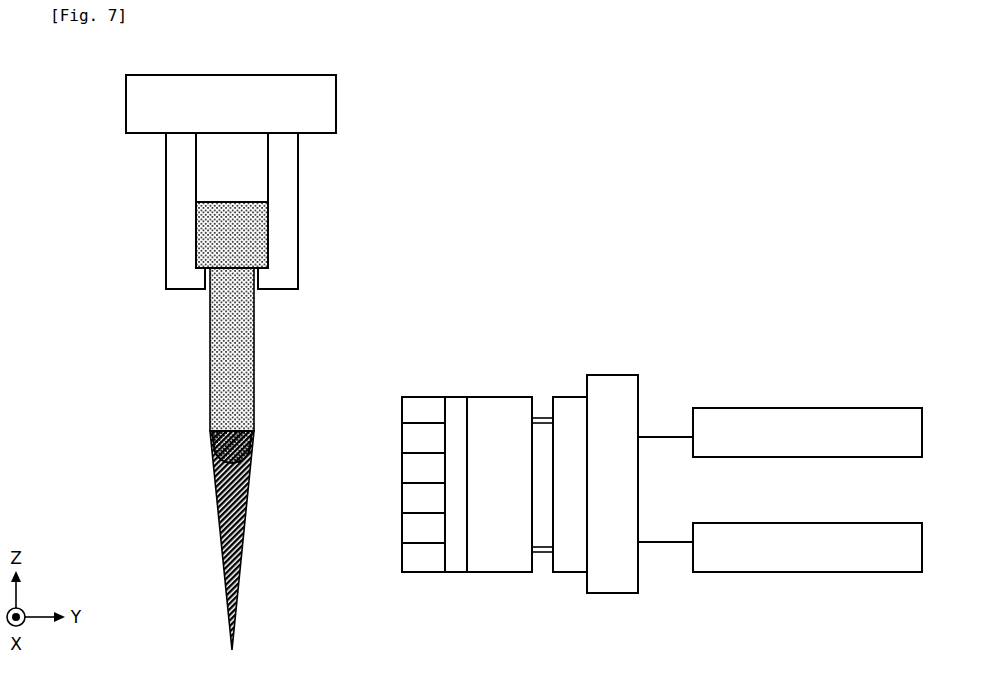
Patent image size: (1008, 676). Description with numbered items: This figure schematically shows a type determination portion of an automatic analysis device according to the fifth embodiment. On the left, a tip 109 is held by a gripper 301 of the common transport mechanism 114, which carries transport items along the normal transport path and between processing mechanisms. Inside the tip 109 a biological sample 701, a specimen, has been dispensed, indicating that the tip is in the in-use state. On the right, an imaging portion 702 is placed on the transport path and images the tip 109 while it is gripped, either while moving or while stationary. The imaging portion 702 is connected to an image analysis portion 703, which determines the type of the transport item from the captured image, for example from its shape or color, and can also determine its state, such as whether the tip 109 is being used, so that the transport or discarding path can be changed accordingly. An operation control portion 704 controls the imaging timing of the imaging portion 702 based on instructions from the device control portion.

The common transport mechanism 114 is at (110, 119).
The gripper 301 is at (172, 192).
The tip 109 is at (210, 402).
The biological sample 701 is at (218, 512).
The imaging portion 702 is at (472, 397).
The image analysis portion 703 is at (812, 407).
The operation control portion 704 is at (812, 522).